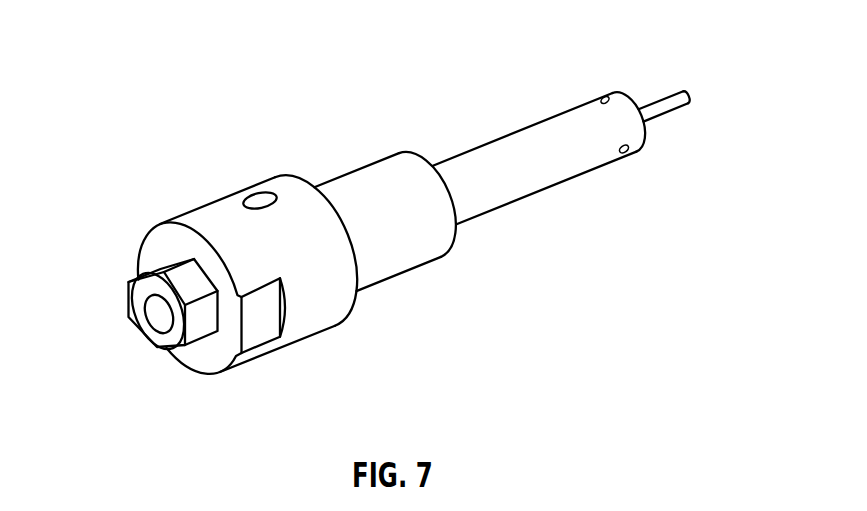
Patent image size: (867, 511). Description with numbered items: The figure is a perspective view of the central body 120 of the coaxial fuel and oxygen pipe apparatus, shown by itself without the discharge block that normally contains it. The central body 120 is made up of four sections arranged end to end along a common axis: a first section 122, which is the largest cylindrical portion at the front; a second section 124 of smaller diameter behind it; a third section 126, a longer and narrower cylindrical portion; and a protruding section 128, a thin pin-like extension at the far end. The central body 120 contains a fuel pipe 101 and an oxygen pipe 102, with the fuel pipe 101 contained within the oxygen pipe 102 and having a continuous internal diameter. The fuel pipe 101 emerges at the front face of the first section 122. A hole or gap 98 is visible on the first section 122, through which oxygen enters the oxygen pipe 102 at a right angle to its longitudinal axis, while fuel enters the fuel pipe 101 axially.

The central body 120 is at (394, 211).
The first section 122 is at (265, 283).
The oxygen pipe 102 is at (217, 185).
The hole or gap 98 is at (250, 169).
The fuel pipe 101 is at (149, 281).
The second section 124 is at (407, 239).
The third section 126 is at (539, 169).
The protruding section 128 is at (674, 76).